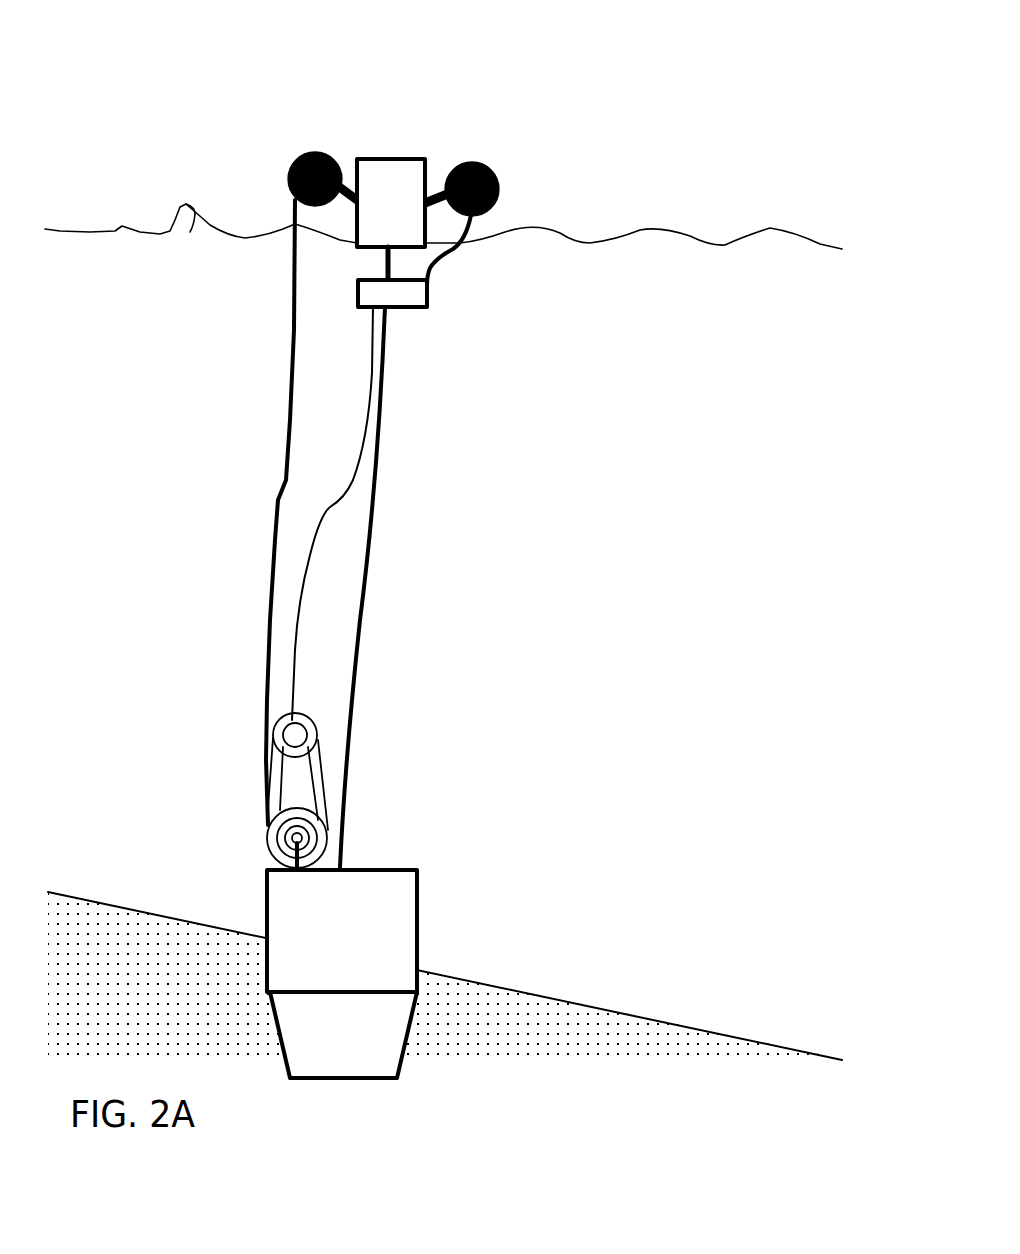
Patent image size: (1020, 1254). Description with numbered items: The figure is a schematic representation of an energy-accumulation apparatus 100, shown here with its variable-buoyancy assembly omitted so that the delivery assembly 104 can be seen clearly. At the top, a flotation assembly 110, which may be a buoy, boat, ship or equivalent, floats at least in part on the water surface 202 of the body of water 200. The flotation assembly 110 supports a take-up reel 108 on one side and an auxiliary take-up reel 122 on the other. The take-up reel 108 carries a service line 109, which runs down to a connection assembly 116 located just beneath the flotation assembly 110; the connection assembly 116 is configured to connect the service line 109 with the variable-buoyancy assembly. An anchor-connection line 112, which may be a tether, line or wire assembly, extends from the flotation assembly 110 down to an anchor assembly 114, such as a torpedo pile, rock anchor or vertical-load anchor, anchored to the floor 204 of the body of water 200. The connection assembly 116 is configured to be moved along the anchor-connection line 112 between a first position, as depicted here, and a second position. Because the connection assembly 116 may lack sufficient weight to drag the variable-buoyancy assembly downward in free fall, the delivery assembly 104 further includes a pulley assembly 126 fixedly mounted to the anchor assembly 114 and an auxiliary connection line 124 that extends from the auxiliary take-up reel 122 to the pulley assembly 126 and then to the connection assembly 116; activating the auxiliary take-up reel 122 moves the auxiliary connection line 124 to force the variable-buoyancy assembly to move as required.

The energy-accumulation apparatus 100 is at (610, 465).
The delivery assembly 104 is at (462, 92).
The take-up reel 108 is at (492, 167).
The service line 109 is at (438, 263).
The flotation assembly 110 is at (390, 158).
The anchor-connection line 112 is at (368, 588).
The anchor assembly 114 is at (418, 932).
The connection assembly 116 is at (431, 293).
The auxiliary take-up reel 122 is at (298, 158).
The auxiliary connection line 124 is at (288, 370).
The pulley assembly 126 is at (265, 853).
The body of water 200 is at (650, 275).
The water surface 202 is at (90, 232).
The floor 204 is at (598, 1008).